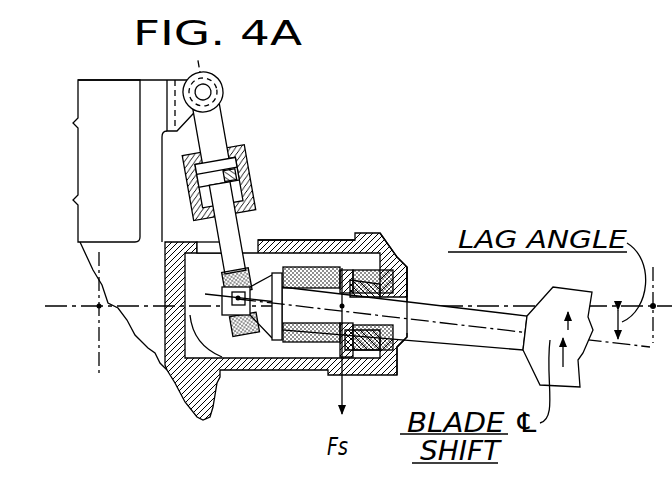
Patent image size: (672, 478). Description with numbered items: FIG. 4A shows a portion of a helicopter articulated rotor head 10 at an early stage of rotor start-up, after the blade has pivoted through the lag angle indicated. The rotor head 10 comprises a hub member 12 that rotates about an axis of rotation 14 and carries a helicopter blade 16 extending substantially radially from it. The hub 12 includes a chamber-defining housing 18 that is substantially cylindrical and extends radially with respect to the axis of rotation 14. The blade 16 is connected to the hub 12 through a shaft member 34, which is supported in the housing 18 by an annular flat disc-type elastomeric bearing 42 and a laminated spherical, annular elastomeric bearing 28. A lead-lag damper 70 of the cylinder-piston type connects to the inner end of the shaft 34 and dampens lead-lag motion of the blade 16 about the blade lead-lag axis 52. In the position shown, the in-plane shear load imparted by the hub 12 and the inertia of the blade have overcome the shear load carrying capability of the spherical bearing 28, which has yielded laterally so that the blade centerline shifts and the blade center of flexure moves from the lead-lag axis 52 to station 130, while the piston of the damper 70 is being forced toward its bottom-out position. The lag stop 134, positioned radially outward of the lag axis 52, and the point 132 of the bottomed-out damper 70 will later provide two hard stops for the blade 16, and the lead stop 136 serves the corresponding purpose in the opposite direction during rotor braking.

The helicopter articulated rotor head 10 is at (327, 121).
The hub member 12 is at (291, 230).
The axis of rotation 14 is at (96, 310).
The helicopter blade 16 is at (567, 290).
The housing 18 is at (167, 369).
The spherical elastomeric bearing 28 is at (397, 262).
The shaft member 34 is at (497, 318).
The flat elastomeric bearing 42 is at (308, 280).
The blade lead-lag axis 52 is at (357, 287).
The lead-lag damper 70 is at (252, 138).
The station 130 is at (328, 315).
The point of bottomed-out damper 132 is at (178, 384).
The lag stop 134 is at (410, 338).
The lead stop 136 is at (407, 275).